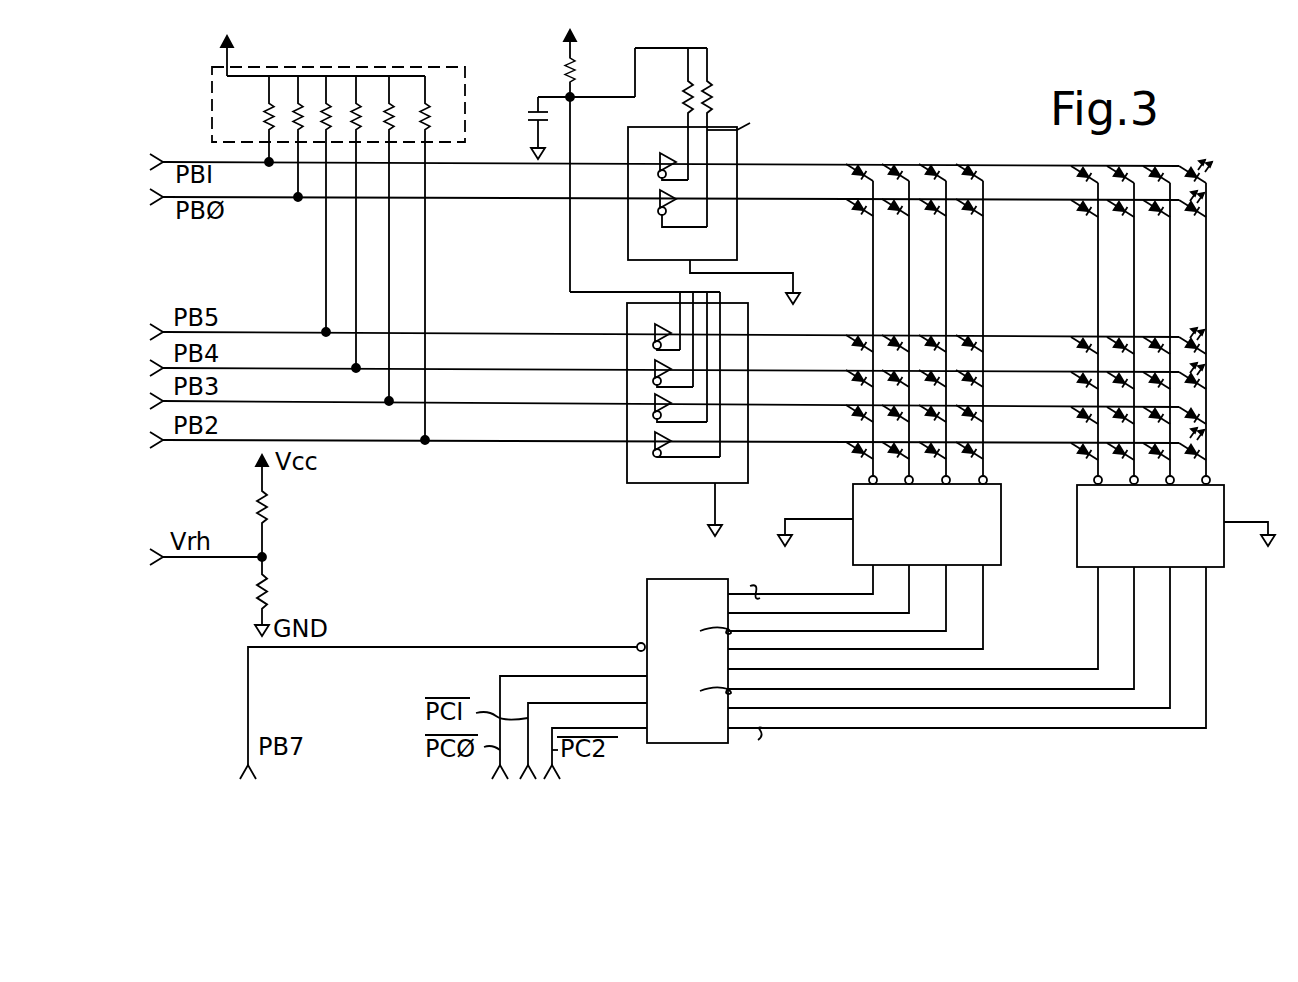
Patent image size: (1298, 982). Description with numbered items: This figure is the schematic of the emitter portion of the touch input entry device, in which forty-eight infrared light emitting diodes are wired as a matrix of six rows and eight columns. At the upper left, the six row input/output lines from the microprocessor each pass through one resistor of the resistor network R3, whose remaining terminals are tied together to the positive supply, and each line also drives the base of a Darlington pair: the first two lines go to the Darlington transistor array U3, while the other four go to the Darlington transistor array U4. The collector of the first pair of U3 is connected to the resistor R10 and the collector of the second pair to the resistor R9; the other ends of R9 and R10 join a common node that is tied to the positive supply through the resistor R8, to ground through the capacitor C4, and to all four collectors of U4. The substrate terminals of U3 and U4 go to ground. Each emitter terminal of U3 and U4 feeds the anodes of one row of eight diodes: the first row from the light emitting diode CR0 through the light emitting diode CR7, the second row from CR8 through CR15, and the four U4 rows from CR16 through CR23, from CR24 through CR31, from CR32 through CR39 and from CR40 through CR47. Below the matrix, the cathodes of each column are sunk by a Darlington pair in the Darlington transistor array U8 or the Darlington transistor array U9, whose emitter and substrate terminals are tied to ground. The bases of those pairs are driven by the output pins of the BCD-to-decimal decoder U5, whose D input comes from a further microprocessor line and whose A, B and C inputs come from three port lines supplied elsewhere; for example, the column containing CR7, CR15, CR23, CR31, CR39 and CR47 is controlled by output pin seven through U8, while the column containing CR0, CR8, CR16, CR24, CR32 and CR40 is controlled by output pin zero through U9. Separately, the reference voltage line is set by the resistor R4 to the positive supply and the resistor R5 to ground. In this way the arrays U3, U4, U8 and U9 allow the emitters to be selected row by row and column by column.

The resistor network R3 is at (338, 236).
The resistor R4 is at (239, 506).
The resistor R5 is at (239, 596).
The resistor R8 is at (596, 160).
The resistor R9 is at (666, 114).
The resistor R10 is at (731, 137).
The capacitor C4 is at (505, 131).
The Darlington transistor array U3 is at (628, 242).
The Darlington transistor array U4 is at (659, 417).
The BCD-to-decimal decoder U5 is at (921, 656).
The Darlington transistor array U8 is at (878, 529).
The Darlington transistor array U9 is at (1185, 531).
The light emitting diode CR0 is at (1221, 212).
The light emitting diode CR7 is at (828, 209).
The light emitting diode CR8 is at (1223, 178).
The light emitting diode CR15 is at (828, 174).
The light emitting diode CR16 is at (1222, 456).
The light emitting diode CR23 is at (823, 456).
The light emitting diode CR24 is at (1226, 421).
The light emitting diode CR31 is at (827, 419).
The light emitting diode CR32 is at (1226, 383).
The light emitting diode CR39 is at (823, 384).
The light emitting diode CR40 is at (1226, 348).
The light emitting diode CR47 is at (823, 348).